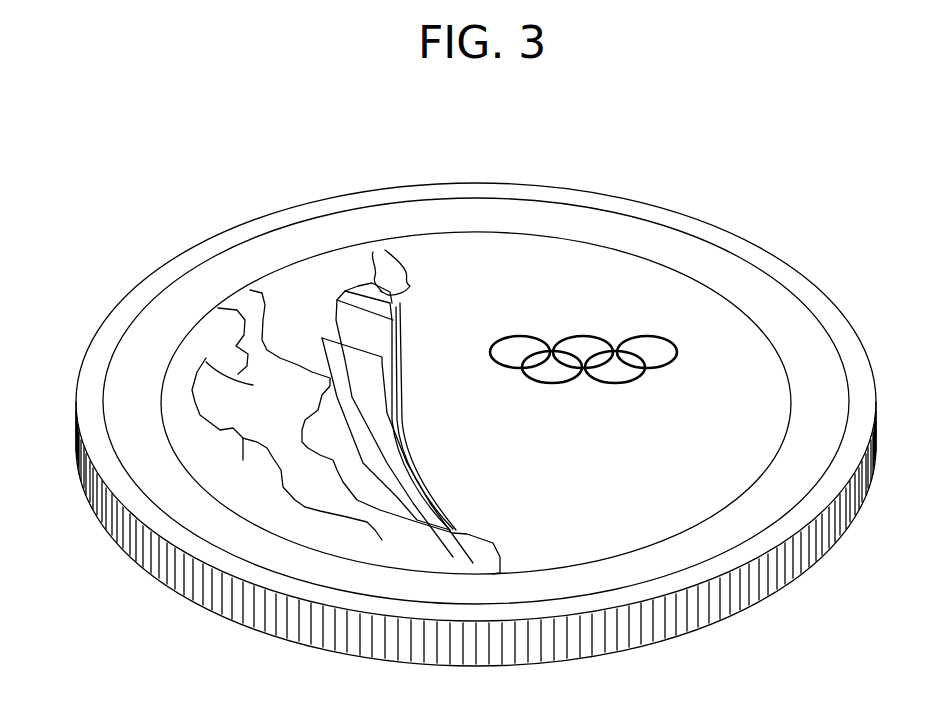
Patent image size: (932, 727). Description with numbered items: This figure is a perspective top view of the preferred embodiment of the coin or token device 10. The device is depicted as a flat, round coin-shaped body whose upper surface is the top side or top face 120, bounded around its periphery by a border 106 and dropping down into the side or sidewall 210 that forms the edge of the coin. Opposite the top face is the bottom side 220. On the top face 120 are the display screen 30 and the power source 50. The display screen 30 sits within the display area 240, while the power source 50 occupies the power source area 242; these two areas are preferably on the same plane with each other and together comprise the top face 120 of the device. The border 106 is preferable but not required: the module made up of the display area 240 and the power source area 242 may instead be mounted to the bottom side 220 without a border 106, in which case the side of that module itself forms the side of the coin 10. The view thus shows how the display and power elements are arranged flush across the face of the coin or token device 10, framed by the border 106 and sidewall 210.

The coin or token device 10 is at (192, 217).
The display screen 30 is at (558, 273).
The power source 50 is at (148, 335).
The border 106 is at (668, 214).
The top side or top face 120 is at (458, 244).
The side or sidewall 210 is at (172, 586).
The bottom side 220 is at (327, 665).
The display area 240 is at (685, 319).
The power source area 242 is at (818, 348).